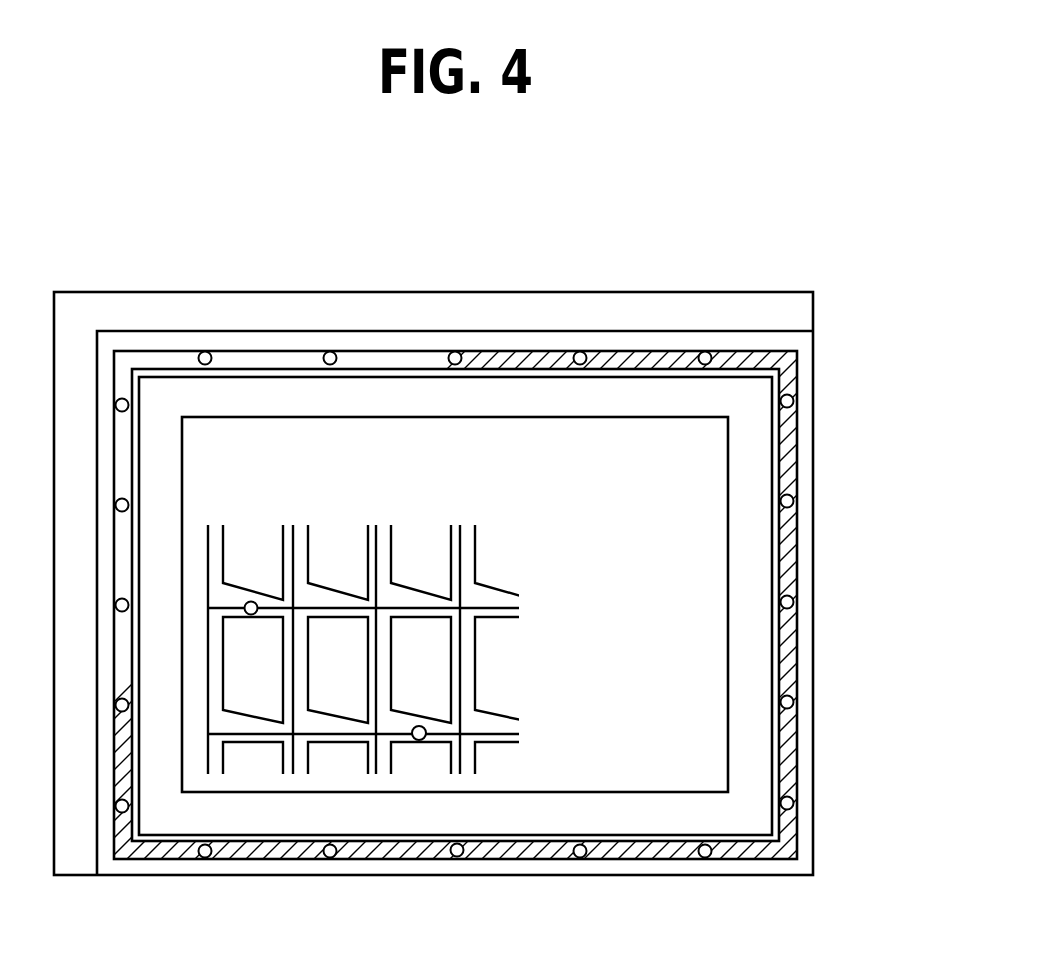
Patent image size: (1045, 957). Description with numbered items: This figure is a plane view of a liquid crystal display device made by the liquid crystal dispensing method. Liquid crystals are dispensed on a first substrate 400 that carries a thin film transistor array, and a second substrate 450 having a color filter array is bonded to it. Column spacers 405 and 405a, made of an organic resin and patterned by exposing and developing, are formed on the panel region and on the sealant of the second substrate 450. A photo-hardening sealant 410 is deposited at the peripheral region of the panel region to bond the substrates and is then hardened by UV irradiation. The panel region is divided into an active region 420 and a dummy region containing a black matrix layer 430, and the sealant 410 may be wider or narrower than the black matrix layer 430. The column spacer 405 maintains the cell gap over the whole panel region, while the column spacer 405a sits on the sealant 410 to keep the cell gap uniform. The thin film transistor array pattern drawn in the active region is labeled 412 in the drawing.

The first substrate 400 is at (813, 302).
The second substrate 450 is at (805, 425).
The photo-hardening sealant 410 is at (797, 757).
The active region 420 is at (710, 700).
The black matrix layer 430 is at (762, 540).
The electrode pattern 412 is at (342, 681).
The column spacer 405 is at (419, 740).
The column spacer 405a is at (459, 856).